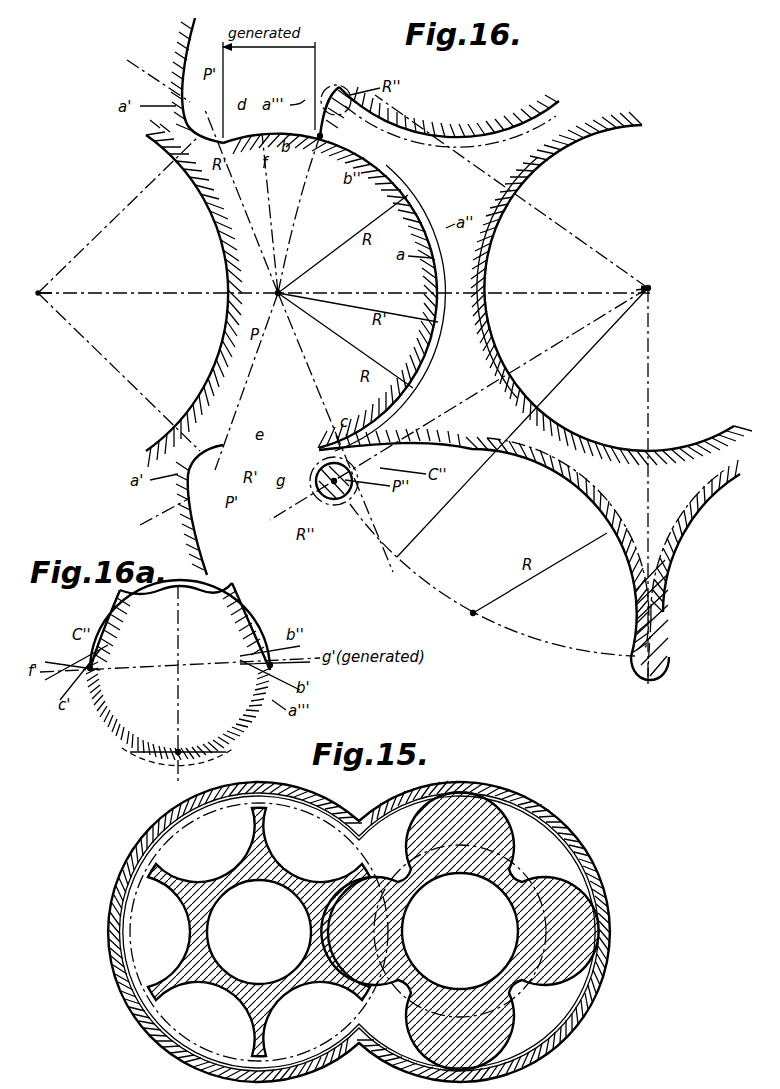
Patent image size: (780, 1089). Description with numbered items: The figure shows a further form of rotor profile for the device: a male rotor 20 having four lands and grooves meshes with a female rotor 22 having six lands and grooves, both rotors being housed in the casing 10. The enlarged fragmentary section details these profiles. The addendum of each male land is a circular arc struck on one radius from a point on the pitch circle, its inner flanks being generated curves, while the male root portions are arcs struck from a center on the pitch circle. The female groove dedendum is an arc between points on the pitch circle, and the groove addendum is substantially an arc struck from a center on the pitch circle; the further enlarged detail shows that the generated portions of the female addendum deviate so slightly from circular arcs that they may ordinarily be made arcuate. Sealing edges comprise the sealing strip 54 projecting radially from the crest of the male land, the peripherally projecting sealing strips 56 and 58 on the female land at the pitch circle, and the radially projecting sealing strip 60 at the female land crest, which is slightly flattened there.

In FIG. 15, the casing 10 is at (313, 803).
In FIG. 15, the male rotor 20 is at (496, 826).
In FIG. 15, the female rotor 22 is at (212, 906).
In FIG. 16, the sealing strip 54 is at (488, 274).
In FIG. 16, the sealing strip 56 is at (320, 140).
In FIG. 16, the sealing strip 58 is at (346, 90).
In FIG. 16, the sealing strip 60 is at (322, 88).